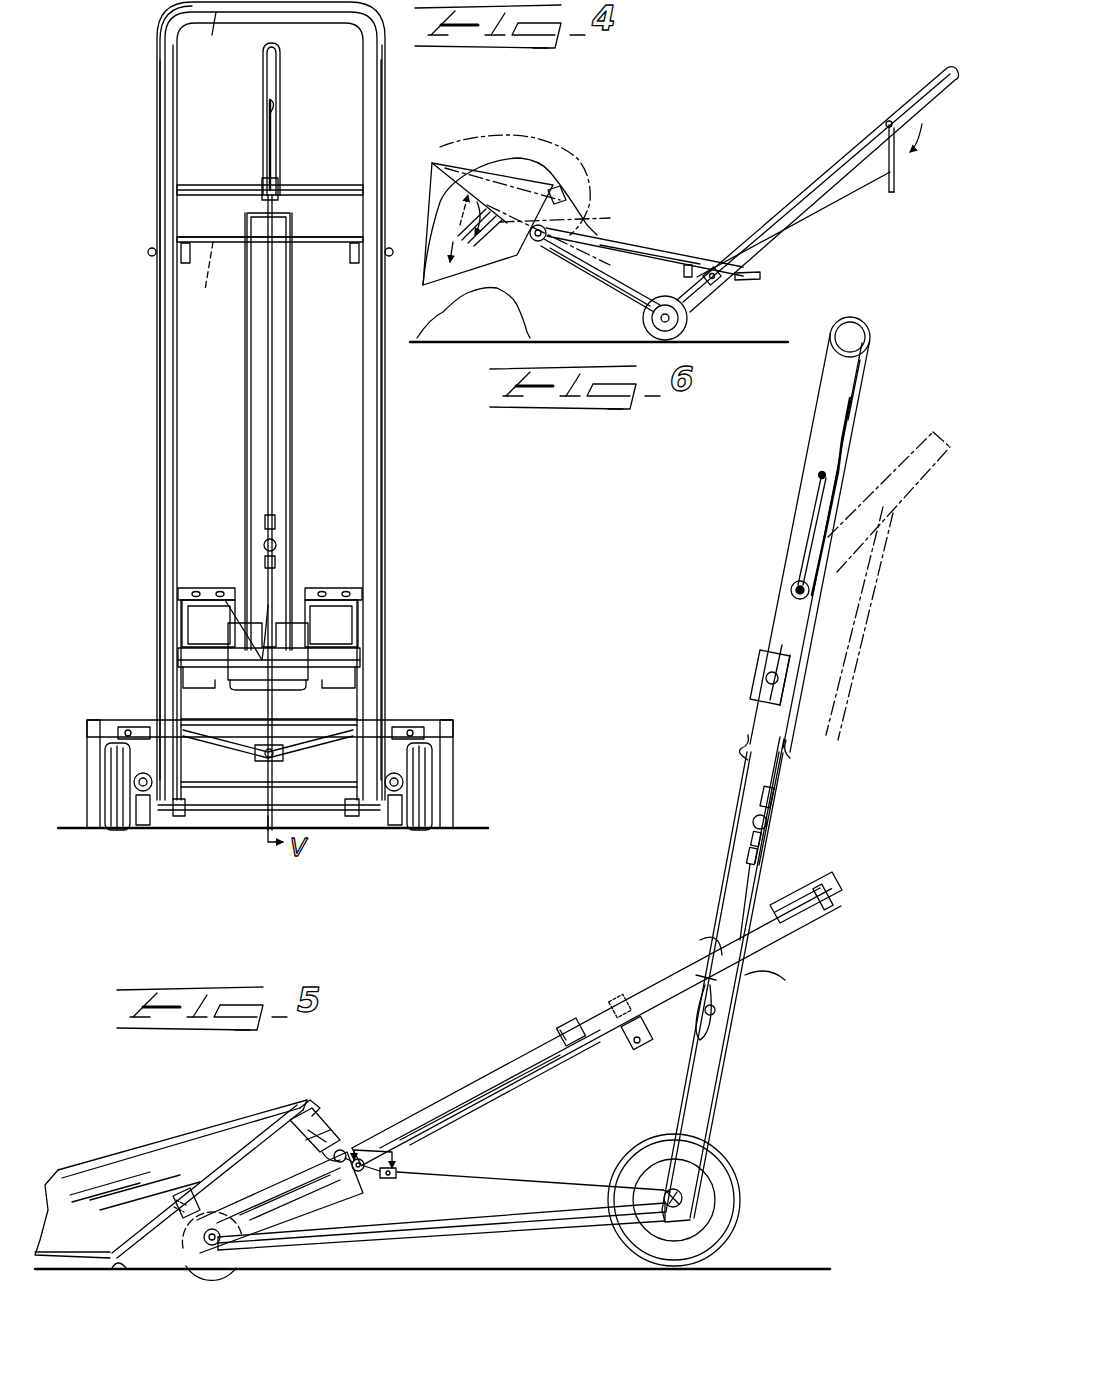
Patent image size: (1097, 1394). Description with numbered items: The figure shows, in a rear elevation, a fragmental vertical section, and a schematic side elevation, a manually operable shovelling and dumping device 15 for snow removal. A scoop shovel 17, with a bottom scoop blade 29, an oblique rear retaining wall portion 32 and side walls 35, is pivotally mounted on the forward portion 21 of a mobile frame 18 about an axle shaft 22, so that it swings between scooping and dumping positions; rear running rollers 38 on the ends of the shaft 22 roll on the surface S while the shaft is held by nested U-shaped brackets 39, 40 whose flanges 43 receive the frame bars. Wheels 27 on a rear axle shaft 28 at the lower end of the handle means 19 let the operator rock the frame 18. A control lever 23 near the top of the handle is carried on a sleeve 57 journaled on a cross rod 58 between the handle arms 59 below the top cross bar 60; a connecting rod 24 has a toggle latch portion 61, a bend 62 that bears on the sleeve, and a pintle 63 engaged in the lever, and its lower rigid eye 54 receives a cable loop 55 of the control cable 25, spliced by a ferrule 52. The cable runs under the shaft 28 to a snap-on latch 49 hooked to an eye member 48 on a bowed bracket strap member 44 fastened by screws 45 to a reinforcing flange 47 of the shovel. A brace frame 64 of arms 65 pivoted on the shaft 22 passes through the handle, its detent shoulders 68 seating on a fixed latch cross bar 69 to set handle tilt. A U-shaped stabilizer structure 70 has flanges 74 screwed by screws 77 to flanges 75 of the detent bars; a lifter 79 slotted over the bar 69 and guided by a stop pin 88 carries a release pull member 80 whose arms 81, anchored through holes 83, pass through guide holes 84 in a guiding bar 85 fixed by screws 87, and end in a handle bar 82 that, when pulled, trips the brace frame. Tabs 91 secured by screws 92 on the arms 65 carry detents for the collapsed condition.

In FIG. 4, the shovelling and dumping device 15 is at (314, 600).
In FIG. 6, the shovelling and dumping device 15 is at (802, 162).
In FIG. 5, the shovelling and dumping device 15 is at (770, 1136).
In FIG. 4, the scoop shovel 17 is at (452, 765).
In FIG. 6, the scoop shovel 17 is at (516, 210).
In FIG. 5, the scoop shovel 17 is at (196, 1146).
In FIG. 4, the mobile frame 18 is at (233, 676).
In FIG. 6, the mobile frame 18 is at (618, 302).
In FIG. 5, the mobile frame 18 is at (550, 1232).
In FIG. 4, the handle means 19 is at (383, 142).
In FIG. 6, the handle means 19 is at (950, 66).
In FIG. 5, the handle means 19 is at (822, 372).
In FIG. 4, the forward portion of the frame 21 is at (146, 826).
In FIG. 6, the forward portion of the frame 21 is at (582, 270).
In FIG. 5, the forward portion of the frame 21 is at (432, 1226).
In FIG. 4, the axle shaft 22 is at (215, 814).
In FIG. 5, the axle shaft 22 is at (212, 1246).
In FIG. 4, the control lever 23 is at (280, 66).
In FIG. 6, the control lever 23 is at (900, 185).
In FIG. 5, the control lever 23 is at (834, 433).
In FIG. 4, the connecting rod 24 is at (273, 448).
In FIG. 6, the connecting rod 24 is at (806, 232).
In FIG. 5, the connecting rod 24 is at (786, 742).
In FIG. 4, the control cable 25 is at (272, 590).
In FIG. 6, the control cable 25 is at (590, 236).
In FIG. 5, the control cable 25 is at (712, 1062).
In FIG. 4, the wheels 27 is at (112, 832).
In FIG. 6, the wheels 27 is at (688, 322).
In FIG. 5, the wheels 27 is at (720, 1222).
In FIG. 4, the rear axle shaft 28 is at (280, 762).
In FIG. 5, the rear axle shaft 28 is at (683, 1192).
In FIG. 5, the bottom scoop blade 29 is at (72, 1262).
In FIG. 4, the rear retaining wall portion 32 is at (92, 768).
In FIG. 5, the rear retaining wall portion 32 is at (228, 1135).
In FIG. 5, the side reinforcing and retaining wall means 35 is at (112, 1168).
In FIG. 6, the rear running rollers 38 is at (534, 242).
In FIG. 5, the rear running rollers 38 is at (192, 1250).
In FIG. 5, the mounting bracket 39 is at (190, 1192).
In FIG. 5, the mounting bracket 40 is at (280, 1202).
In FIG. 5, the supporting flanges 43 is at (186, 1224).
In FIG. 4, the bracket strap member 44 is at (228, 752).
In FIG. 6, the bracket strap member 44 is at (566, 190).
In FIG. 5, the bracket strap member 44 is at (320, 1120).
In FIG. 4, the rivets or screws 45 is at (130, 726).
In FIG. 4, the underturned reinforcing flange 47 is at (95, 718).
In FIG. 5, the underturned reinforcing flange 47 is at (312, 1106).
In FIG. 5, the eye member 48 is at (301, 1163).
In FIG. 5, the snap-on hooked spring latch 49 is at (356, 1172).
In FIG. 5, the sleeve or ferrule 52 is at (762, 854).
In FIG. 5, the rigid eye 54 is at (768, 822).
In FIG. 5, the cable loop 55 is at (764, 844).
In FIG. 4, the sleeve 57 is at (232, 193).
In FIG. 5, the sleeve 57 is at (792, 584).
In FIG. 5, the cross rod 58 is at (792, 592).
In FIG. 4, the handle arms 59 is at (158, 224).
In FIG. 6, the handle arms 59 is at (798, 198).
In FIG. 5, the handle arms 59 is at (862, 380).
In FIG. 4, the top handle cross bar 60 is at (225, 34).
In FIG. 5, the top handle cross bar 60 is at (868, 330).
In FIG. 4, the upper end portion of the rod 61 is at (272, 140).
In FIG. 5, the upper end portion of the rod 61 is at (800, 560).
In FIG. 5, the bend 62 is at (818, 612).
In FIG. 4, the terminal pintle 63 is at (279, 104).
In FIG. 5, the terminal pintle 63 is at (818, 476).
In FIG. 4, the adjustable brace frame 64 is at (345, 575).
In FIG. 6, the adjustable brace frame 64 is at (688, 258).
In FIG. 5, the adjustable brace frame 64 is at (480, 1078).
In FIG. 4, the brace frame arms 65 is at (192, 772).
In FIG. 5, the brace frame arms 65 is at (470, 1108).
In FIG. 6, the detent shoulders 68 is at (740, 282).
In FIG. 5, the detent shoulders 68 is at (765, 965).
In FIG. 4, the latch cross bar 69 is at (356, 657).
In FIG. 6, the latch cross bar 69 is at (712, 268).
In FIG. 5, the latch cross bar 69 is at (748, 940).
In FIG. 5, the stabilizer and shoulder structure 70 is at (598, 1008).
In FIG. 4, the terminal attachment flange portions 74 is at (190, 625).
In FIG. 5, the terminal attachment flange portions 74 is at (806, 920).
In FIG. 4, the attachment terminal flange portions 75 is at (206, 600).
In FIG. 5, the attachment terminal flange portions 75 is at (828, 920).
In FIG. 4, the screws 77 is at (214, 594).
In FIG. 5, the screws 77 is at (826, 896).
In FIG. 4, the lifter 79 is at (246, 680).
In FIG. 5, the lifter 79 is at (660, 1052).
In FIG. 4, the release pull member 80 is at (244, 416).
In FIG. 4, the arms of the pull member 81 is at (289, 337).
In FIG. 5, the arms of the pull member 81 is at (756, 712).
In FIG. 4, the handle bar 82 is at (284, 216).
In FIG. 5, the handle bar 82 is at (778, 648).
In FIG. 4, the anchoring holes 83 is at (240, 600).
In FIG. 5, the anchoring holes 83 is at (718, 946).
In FIG. 4, the guide holes 84 is at (305, 240).
In FIG. 5, the guide holes 84 is at (792, 690).
In FIG. 4, the reinforcing and guiding bar 85 is at (226, 240).
In FIG. 5, the reinforcing and guiding bar 85 is at (764, 672).
In FIG. 4, the screws 87 is at (184, 262).
In FIG. 4, the guide and stop pin 88 is at (272, 660).
In FIG. 5, the tabs 91 is at (628, 1036).
In FIG. 5, the screws 92 is at (628, 996).
In FIG. 5, the surface S is at (118, 1272).